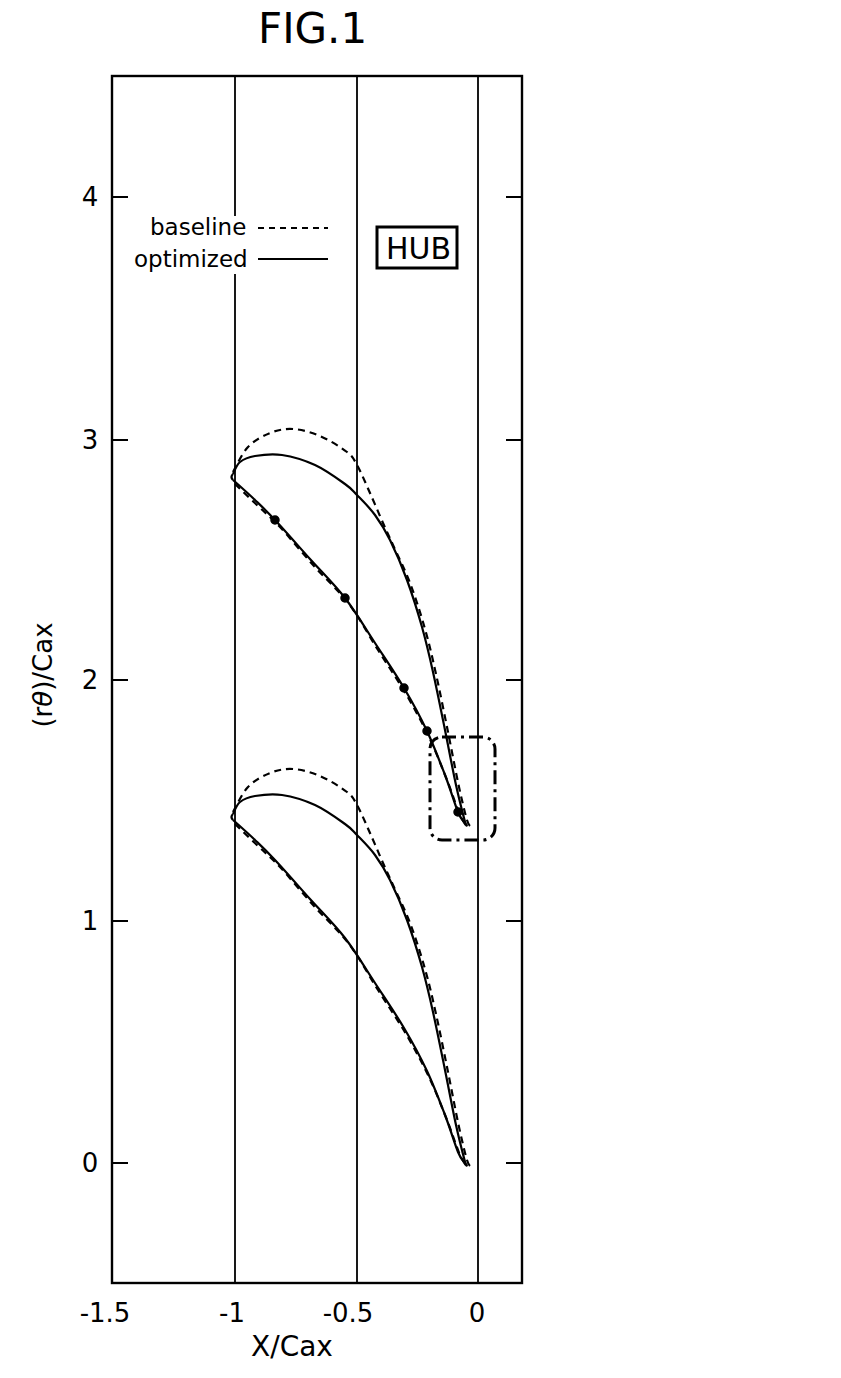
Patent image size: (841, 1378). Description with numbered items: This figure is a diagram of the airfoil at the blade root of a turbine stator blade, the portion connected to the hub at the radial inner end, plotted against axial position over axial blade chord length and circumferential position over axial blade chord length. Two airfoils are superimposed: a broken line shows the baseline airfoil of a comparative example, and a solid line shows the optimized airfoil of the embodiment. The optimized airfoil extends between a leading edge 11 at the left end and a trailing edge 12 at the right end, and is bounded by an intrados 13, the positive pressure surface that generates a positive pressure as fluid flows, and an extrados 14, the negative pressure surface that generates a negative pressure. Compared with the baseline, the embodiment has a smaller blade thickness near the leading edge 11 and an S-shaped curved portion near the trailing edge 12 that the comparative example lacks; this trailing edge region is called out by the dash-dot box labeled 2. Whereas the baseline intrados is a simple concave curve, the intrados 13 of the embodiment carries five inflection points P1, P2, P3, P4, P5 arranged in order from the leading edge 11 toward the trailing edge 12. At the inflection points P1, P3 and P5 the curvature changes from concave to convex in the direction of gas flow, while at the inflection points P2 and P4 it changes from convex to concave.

The trailing edge region 2 is at (497, 772).
The leading edge 11 is at (233, 477).
The trailing edge 12 is at (468, 830).
The intrados 13 is at (308, 562).
The extrados 14 is at (364, 498).
The inflection point P1 is at (275, 522).
The inflection point P2 is at (345, 600).
The inflection point P3 is at (404, 690).
The inflection point P4 is at (427, 733).
The inflection point P5 is at (457, 813).